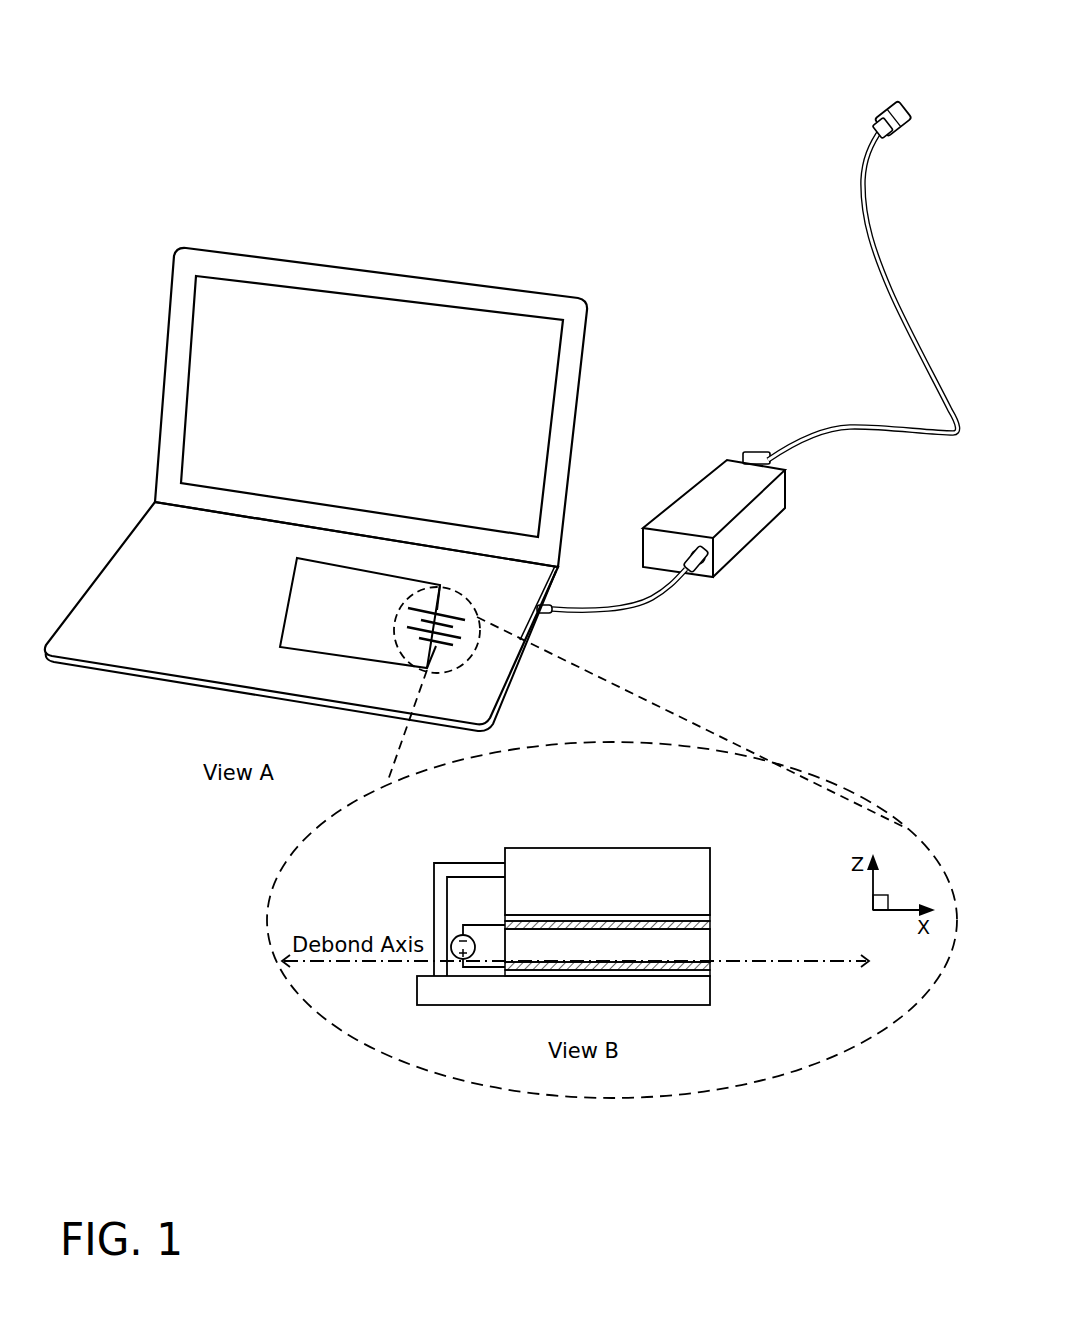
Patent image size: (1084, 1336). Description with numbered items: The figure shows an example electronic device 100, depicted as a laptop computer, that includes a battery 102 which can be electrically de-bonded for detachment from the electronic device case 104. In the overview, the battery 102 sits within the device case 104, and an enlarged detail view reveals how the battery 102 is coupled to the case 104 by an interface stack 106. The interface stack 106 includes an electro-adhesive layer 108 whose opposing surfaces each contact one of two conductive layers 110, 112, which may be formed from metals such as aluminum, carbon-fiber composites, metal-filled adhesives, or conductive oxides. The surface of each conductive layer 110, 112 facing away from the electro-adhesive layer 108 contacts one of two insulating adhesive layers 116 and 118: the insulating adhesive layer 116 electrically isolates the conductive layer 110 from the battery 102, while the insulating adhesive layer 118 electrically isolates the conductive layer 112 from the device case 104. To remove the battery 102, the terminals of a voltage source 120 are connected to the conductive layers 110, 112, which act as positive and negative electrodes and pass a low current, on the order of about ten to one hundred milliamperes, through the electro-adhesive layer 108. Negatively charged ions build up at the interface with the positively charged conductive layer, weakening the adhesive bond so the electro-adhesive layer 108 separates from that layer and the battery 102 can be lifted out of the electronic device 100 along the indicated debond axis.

The electronic device 100 is at (208, 77).
The battery 102 is at (393, 628).
The electronic device case 104 is at (213, 604).
The interface stack 106 is at (722, 958).
The electro-adhesive layer 108 is at (701, 939).
The conductive layer 110 is at (701, 926).
The conductive layer 112 is at (712, 966).
The insulating adhesive layer 116 is at (662, 918).
The insulating adhesive layer 118 is at (657, 974).
The voltage source 120 is at (458, 957).